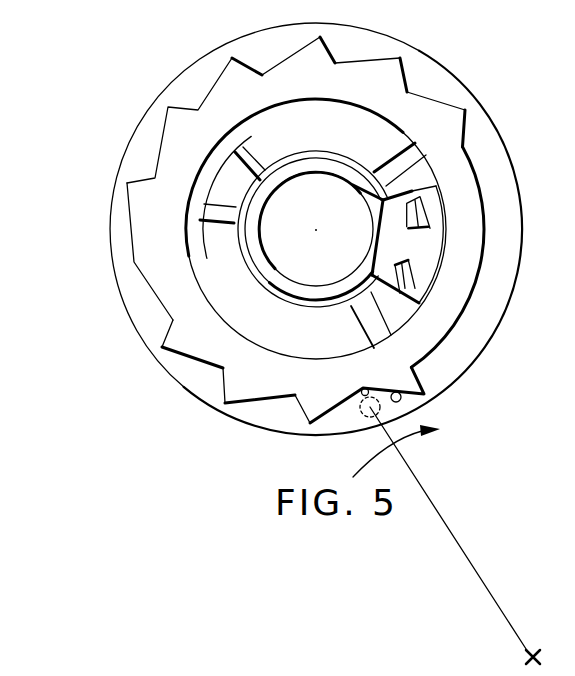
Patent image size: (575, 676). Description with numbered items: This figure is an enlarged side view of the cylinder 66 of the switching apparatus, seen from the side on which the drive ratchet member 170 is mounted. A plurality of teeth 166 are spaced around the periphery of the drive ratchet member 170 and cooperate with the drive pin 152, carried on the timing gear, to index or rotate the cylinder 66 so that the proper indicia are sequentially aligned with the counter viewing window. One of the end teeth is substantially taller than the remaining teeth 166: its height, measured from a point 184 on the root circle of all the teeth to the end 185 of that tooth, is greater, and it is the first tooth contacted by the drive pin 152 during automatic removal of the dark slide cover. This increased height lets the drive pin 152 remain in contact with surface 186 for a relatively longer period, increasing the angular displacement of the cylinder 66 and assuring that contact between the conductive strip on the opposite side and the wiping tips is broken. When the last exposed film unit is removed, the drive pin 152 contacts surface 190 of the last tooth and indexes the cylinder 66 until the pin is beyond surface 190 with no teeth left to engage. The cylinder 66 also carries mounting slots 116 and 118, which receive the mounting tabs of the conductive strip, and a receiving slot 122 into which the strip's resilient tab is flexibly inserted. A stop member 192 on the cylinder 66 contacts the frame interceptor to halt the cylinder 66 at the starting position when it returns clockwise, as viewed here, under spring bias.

The cylinder 66 is at (120, 130).
The surface of the last tooth 190 is at (468, 130).
The drive ratchet member 170 is at (463, 246).
The end of the end tooth 185 is at (426, 397).
The teeth 166 is at (222, 381).
The stop member 192 is at (236, 152).
The mounting slot 118 is at (400, 167).
The mounting slot 116 is at (370, 320).
The receiving slot 122 is at (414, 250).
The point on the root circle 184 is at (362, 390).
The surface 186 is at (396, 392).
The drive pin 152 is at (364, 416).